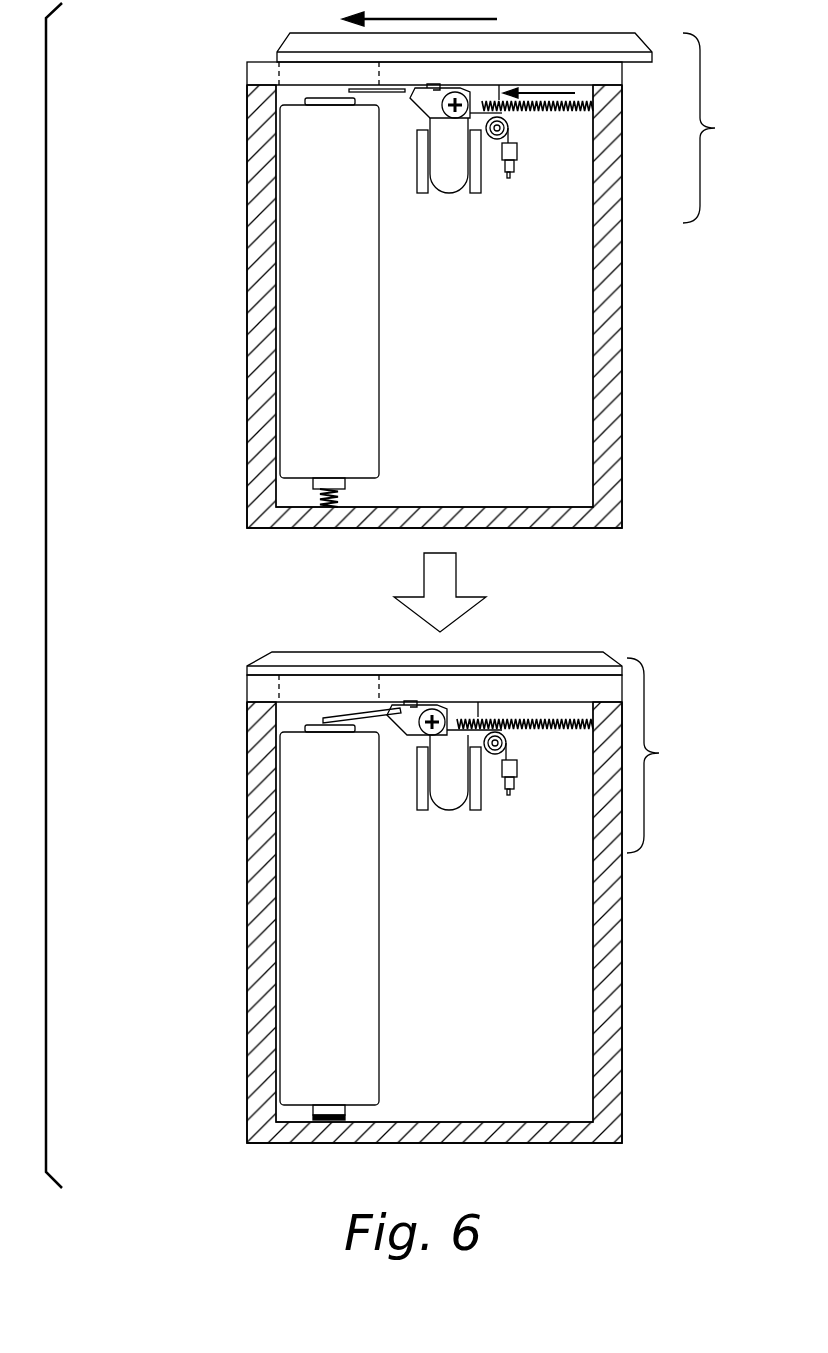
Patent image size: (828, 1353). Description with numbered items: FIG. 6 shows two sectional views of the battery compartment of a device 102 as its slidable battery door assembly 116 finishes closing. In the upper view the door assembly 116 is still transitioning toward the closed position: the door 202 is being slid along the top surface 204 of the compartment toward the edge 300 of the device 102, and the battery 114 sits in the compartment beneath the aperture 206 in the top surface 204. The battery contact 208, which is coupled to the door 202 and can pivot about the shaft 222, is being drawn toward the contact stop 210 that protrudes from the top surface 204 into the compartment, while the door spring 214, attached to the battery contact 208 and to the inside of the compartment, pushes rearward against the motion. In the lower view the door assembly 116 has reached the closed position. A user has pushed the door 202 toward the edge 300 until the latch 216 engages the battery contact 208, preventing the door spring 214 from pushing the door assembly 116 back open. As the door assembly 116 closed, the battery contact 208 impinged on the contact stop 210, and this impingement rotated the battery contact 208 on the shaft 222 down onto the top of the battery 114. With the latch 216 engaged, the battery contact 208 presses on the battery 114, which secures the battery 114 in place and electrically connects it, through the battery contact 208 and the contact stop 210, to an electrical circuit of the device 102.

The device 102 is at (227, 70).
The battery 114 is at (314, 309).
The slidable battery door assembly 116 is at (719, 128).
The door 202 is at (308, 42).
The top surface 204 is at (558, 83).
The aperture 206 is at (315, 83).
The battery contact 208 is at (428, 106).
The contact stop 210 is at (410, 708).
The door spring 214 is at (577, 115).
The latch 216 is at (467, 153).
The shaft 222 is at (432, 737).
The edge 300 is at (248, 205).